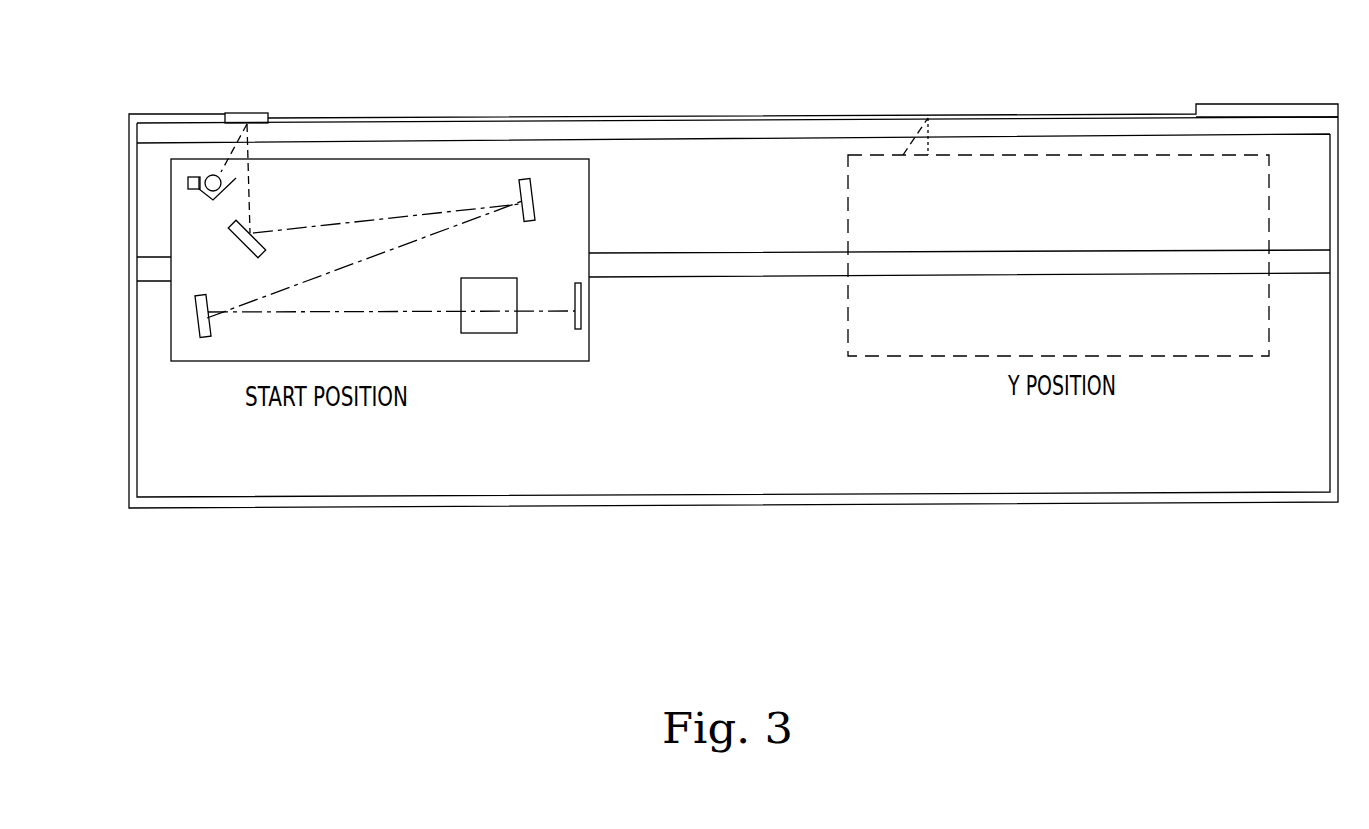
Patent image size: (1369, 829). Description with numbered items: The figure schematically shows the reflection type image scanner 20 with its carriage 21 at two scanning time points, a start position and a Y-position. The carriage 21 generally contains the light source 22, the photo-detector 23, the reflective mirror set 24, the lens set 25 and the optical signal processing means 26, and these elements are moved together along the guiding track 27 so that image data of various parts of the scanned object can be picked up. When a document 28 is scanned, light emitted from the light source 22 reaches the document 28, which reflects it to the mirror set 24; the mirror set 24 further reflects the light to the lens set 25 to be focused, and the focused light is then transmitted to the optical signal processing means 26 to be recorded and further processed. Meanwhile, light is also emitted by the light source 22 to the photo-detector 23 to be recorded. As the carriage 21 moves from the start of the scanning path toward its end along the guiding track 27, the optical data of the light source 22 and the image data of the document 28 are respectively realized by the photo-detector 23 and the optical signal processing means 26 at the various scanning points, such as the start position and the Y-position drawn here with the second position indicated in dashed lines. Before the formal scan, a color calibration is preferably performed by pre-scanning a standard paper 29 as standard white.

The image scanner 20 is at (647, 505).
The carriage 21 is at (439, 363).
The light source 22 is at (213, 177).
The photo-detector 23 is at (188, 183).
The reflective mirror set 24 is at (540, 205).
The lens set 25 is at (493, 323).
The optical signal processing means 26 is at (578, 298).
The guiding track 27 is at (727, 263).
The document 28 is at (588, 118).
The standard paper 29 is at (248, 113).